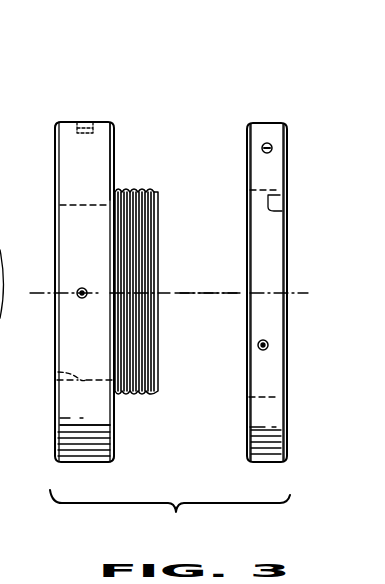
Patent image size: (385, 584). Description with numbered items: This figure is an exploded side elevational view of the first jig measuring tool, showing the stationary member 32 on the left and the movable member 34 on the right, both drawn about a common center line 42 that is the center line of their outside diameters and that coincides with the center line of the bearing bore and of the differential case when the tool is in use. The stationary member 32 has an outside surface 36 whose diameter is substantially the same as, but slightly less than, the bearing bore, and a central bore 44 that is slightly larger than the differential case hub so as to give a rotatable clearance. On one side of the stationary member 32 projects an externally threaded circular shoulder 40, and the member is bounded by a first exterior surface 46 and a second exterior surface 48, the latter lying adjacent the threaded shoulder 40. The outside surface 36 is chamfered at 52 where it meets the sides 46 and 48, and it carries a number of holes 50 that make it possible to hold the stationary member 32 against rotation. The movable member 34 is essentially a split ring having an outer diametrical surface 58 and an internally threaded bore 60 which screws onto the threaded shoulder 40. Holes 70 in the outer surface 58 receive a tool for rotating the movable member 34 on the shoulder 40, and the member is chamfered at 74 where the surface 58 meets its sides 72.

The stationary member 32 is at (112, 120).
The movable member 34 is at (263, 123).
The outside surface 36 is at (70, 121).
The circular shoulder 40 is at (136, 190).
The center line 42 is at (200, 293).
The central bore 44 is at (56, 372).
The first exterior surface 46 is at (55, 238).
The second exterior surface 48 is at (116, 148).
The holes 50 is at (92, 118).
The chamfer 52 is at (56, 123).
The outer diametrical surface 58 is at (70, 402).
The internally threaded bore 60 is at (288, 206).
The holes 70 is at (261, 150).
The sides 72 is at (112, 425).
The chamfer 74 is at (250, 125).